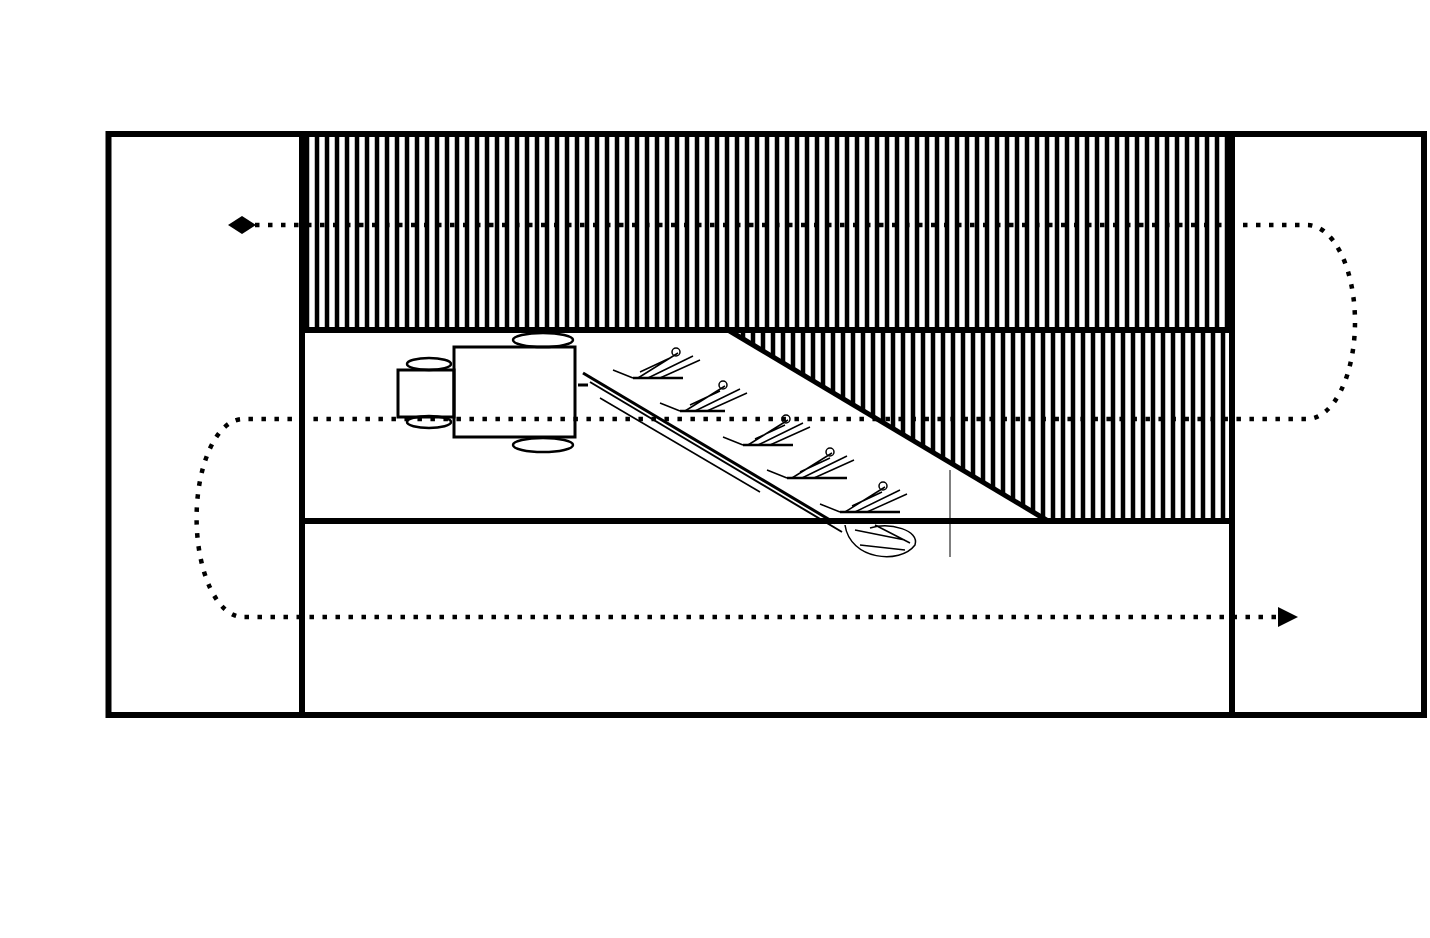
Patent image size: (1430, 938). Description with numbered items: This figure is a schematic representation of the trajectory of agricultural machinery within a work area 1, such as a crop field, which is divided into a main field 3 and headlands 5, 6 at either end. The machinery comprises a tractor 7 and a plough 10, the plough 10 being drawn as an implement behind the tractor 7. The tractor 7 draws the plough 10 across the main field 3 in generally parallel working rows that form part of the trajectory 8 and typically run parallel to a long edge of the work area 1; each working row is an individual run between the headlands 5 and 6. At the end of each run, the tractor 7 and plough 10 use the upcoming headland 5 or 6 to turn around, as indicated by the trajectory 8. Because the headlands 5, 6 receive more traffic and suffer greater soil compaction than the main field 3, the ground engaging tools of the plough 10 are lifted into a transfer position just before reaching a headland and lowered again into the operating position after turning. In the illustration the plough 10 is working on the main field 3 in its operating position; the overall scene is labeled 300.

The field work scenario 300 is at (93, 66).
The work area 1 is at (1250, 96).
The main field 3 is at (885, 116).
The headland 5 is at (1362, 163).
The headland 6 is at (145, 343).
The tractor 7 is at (517, 333).
The trajectory 8 is at (1132, 615).
The plough 10 is at (725, 455).